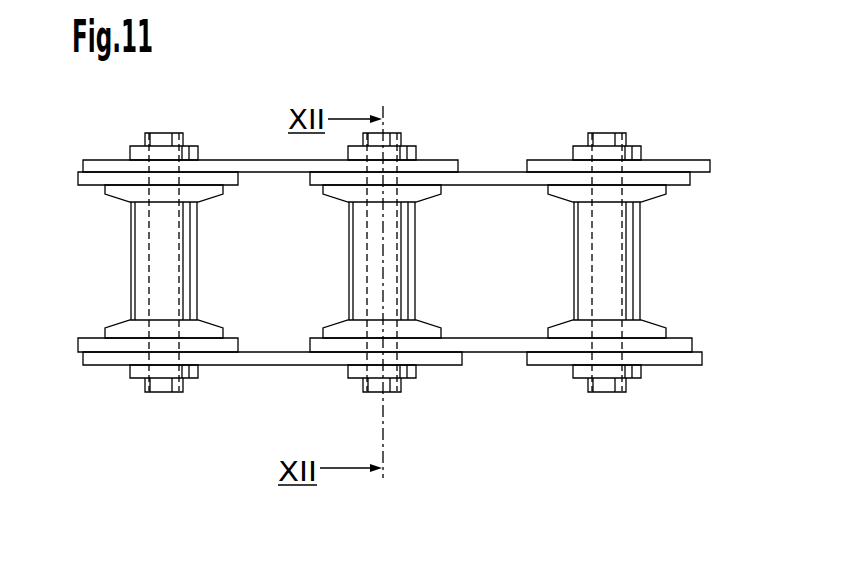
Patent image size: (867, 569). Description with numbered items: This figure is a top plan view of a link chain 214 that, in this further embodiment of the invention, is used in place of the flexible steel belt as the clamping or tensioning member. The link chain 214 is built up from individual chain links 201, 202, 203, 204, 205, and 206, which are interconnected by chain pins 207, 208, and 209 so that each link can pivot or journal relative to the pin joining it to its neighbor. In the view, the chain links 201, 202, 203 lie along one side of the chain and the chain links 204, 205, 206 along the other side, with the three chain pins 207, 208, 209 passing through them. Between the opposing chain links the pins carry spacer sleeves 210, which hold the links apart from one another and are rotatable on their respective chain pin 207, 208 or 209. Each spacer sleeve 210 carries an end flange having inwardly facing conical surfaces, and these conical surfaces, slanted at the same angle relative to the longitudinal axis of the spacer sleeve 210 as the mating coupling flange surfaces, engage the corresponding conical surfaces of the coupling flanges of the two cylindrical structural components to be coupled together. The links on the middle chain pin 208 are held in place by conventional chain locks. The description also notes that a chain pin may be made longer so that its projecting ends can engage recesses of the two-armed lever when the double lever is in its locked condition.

The chain link 201 is at (260, 158).
The chain link 202 is at (491, 174).
The chain link 203 is at (678, 163).
The chain link 204 is at (262, 365).
The chain link 205 is at (494, 354).
The chain link 206 is at (677, 362).
The chain pin 207 is at (151, 388).
The chain pin 208 is at (380, 398).
The chain pin 209 is at (606, 392).
The spacer sleeve 210 is at (370, 248).
The link chain 214 is at (440, 96).